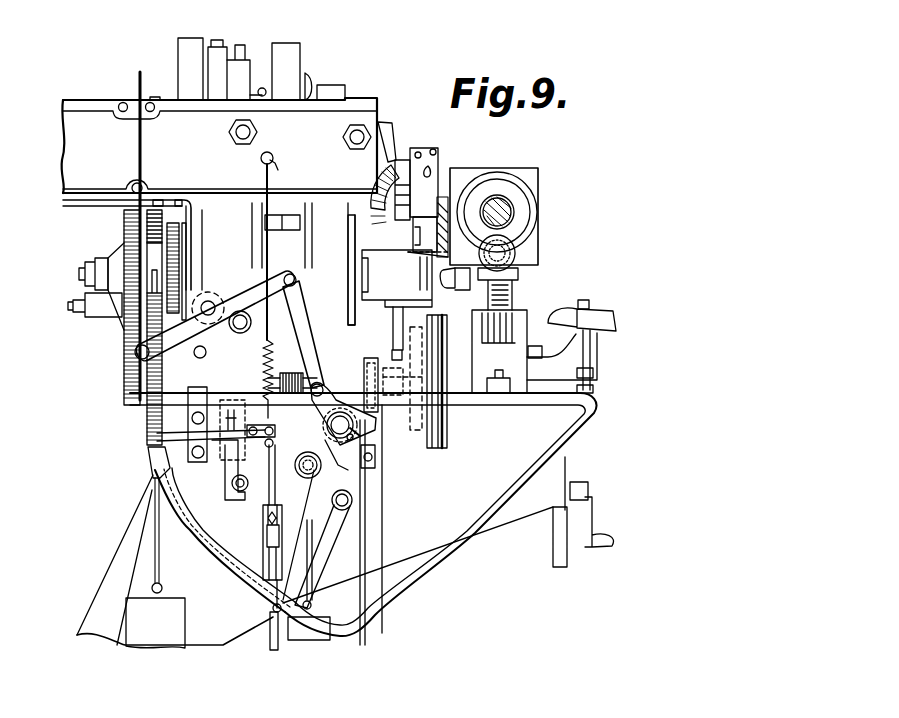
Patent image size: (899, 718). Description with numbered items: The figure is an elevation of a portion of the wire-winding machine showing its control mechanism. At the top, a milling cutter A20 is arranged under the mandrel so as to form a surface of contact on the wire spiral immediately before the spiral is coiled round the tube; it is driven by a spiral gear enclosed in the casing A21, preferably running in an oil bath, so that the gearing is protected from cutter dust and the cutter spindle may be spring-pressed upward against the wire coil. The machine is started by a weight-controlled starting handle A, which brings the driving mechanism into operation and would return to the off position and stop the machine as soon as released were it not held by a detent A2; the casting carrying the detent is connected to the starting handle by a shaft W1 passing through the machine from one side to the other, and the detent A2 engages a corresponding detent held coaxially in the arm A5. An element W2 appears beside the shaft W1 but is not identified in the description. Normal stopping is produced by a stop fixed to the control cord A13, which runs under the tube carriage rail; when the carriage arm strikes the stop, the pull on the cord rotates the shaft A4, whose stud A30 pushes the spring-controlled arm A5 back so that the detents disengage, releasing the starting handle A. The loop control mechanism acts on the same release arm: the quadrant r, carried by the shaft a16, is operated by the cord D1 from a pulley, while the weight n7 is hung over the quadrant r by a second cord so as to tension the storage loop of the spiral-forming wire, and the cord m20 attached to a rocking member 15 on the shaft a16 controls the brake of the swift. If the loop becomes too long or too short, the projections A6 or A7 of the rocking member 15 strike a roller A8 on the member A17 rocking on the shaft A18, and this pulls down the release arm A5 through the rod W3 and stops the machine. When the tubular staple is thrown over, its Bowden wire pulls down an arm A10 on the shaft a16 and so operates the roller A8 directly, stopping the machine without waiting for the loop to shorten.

The milling cutter A20 is at (410, 152).
The casing A21 is at (375, 292).
The shaft A4 is at (327, 382).
The stud A30 is at (196, 345).
The shaft W1 is at (208, 302).
The roller W2 is at (240, 312).
The cord D1 is at (133, 298).
The detent A2 is at (157, 400).
The arm A5 is at (266, 446).
The rod W3 is at (258, 437).
The arm A10 is at (300, 472).
The member A17 is at (273, 500).
The shaft A18 is at (343, 509).
The projection A6 is at (270, 423).
The rocking member 15 is at (370, 423).
The starting handle A is at (368, 436).
The shaft a16 is at (372, 445).
The control cord A13 is at (437, 448).
The projection A7 is at (362, 432).
The roller A8 is at (318, 468).
The cord m20 is at (360, 544).
The quadrant r is at (191, 549).
The weight n7 is at (170, 614).